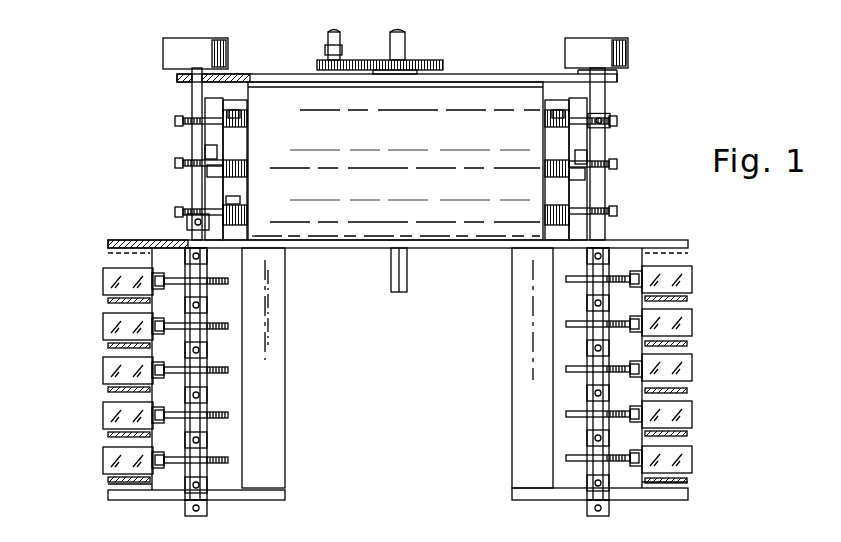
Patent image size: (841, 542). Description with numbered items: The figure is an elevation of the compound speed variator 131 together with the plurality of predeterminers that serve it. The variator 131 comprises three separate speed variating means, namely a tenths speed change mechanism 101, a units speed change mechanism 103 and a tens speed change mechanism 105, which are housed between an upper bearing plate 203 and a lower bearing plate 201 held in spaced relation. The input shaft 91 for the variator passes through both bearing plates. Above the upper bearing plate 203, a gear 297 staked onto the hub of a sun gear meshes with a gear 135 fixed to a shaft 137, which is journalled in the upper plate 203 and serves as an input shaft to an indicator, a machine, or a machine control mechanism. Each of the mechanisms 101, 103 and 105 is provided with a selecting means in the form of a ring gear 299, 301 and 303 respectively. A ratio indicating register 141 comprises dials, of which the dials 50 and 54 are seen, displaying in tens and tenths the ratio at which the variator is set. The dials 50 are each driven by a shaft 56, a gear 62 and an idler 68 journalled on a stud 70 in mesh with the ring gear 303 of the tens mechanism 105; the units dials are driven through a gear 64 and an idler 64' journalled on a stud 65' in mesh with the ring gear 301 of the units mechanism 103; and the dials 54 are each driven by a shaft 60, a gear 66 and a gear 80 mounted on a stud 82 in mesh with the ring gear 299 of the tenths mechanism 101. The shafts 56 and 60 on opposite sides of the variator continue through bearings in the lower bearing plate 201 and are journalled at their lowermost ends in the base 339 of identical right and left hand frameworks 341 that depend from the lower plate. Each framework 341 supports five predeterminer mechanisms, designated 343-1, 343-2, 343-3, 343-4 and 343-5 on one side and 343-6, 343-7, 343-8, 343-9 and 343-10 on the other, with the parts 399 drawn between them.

The dial 50 is at (591, 38).
The dial 54 is at (207, 38).
The shaft 56 is at (606, 100).
The shaft 60 is at (192, 97).
The gear 62 is at (177, 122).
The gear 64 is at (387, 162).
The idler 64' is at (400, 180).
The stud 65' is at (400, 147).
The gear 66 is at (177, 214).
The idler 68 is at (215, 117).
The stud 70 is at (234, 116).
The gear 80 is at (259, 300).
The stud 82 is at (232, 200).
The input shaft 91 is at (393, 273).
The tenths speed change mechanism 101 is at (275, 201).
The units speed change mechanism 103 is at (262, 156).
The tens speed change mechanism 105 is at (268, 127).
The compound speed variator 131 is at (506, 56).
The gear 135 is at (326, 57).
The shaft 137 is at (335, 31).
The ratio indicating register 141 is at (161, 50).
The lower bearing plate 201 is at (650, 240).
The upper bearing plate 203 is at (290, 76).
The gear 297 is at (436, 62).
The ring gear 299 is at (250, 219).
The ring gear 301 is at (248, 172).
The ring gear 303 is at (250, 122).
The base 339 is at (250, 498).
The framework 341 is at (270, 378).
The predeterminer mechanism 343-1 is at (697, 275).
The predeterminer mechanism 343-2 is at (697, 325).
The predeterminer mechanism 343-3 is at (697, 373).
The predeterminer mechanism 343-4 is at (697, 420).
The predeterminer mechanism 343-5 is at (697, 470).
The predeterminer mechanism 343-6 is at (105, 282).
The predeterminer mechanism 343-7 is at (105, 327).
The predeterminer mechanism 343-8 is at (105, 372).
The predeterminer mechanism 343-9 is at (107, 428).
The predeterminer mechanism 343-10 is at (107, 470).
The spacer strip 399 is at (105, 268).